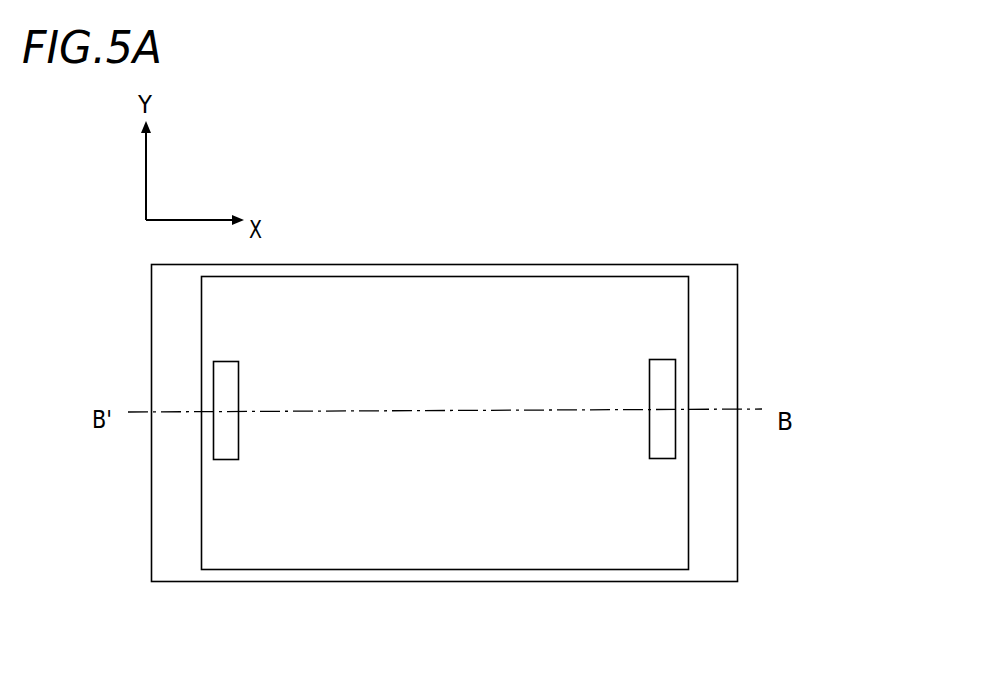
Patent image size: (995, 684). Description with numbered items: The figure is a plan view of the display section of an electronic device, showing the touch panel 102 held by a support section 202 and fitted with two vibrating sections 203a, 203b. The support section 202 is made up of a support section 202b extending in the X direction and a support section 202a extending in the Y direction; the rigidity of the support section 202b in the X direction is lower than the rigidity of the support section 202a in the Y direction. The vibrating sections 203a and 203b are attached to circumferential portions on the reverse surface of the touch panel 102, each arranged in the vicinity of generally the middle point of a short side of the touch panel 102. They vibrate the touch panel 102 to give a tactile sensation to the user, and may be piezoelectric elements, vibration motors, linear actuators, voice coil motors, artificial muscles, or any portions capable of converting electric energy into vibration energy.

The support section 202 is at (721, 170).
The support section extending in the Y direction 202a is at (723, 367).
The support section extending in the X direction 202b is at (640, 263).
The vibrating section 203a is at (216, 429).
The vibrating section 203b is at (665, 392).
The touch panel 102 is at (652, 520).